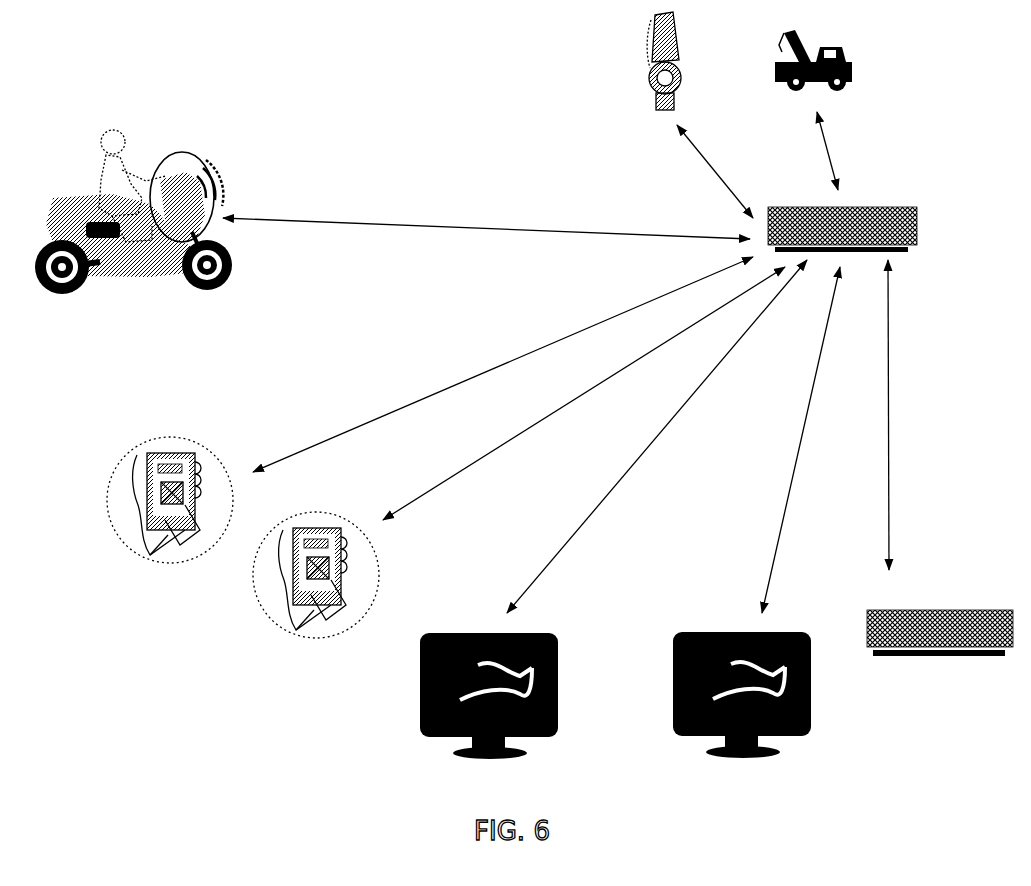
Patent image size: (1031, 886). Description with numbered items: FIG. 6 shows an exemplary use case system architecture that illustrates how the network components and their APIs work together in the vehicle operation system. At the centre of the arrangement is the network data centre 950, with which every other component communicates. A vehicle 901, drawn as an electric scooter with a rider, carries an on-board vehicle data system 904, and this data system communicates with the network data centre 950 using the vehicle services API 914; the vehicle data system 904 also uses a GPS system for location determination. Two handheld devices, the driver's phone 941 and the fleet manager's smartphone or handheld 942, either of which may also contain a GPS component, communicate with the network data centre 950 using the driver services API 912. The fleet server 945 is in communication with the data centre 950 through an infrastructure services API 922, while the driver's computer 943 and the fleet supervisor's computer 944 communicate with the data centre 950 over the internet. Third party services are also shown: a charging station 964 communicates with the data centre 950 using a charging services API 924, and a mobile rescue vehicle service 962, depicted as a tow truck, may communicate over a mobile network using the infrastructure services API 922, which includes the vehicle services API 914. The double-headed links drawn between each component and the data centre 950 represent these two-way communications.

The vehicle 901 is at (132, 259).
The vehicle data system 904 is at (175, 148).
The driver services API 912 is at (519, 388).
The vehicle services API 914 is at (486, 221).
The infrastructure services API 922 is at (875, 341).
The charging services API 924 is at (715, 171).
The driver's phone 941 is at (139, 535).
The fleet manager's smartphone or handheld 942 is at (284, 614).
The driver's computer 943 is at (443, 701).
The fleet supervisor's computer 944 is at (696, 695).
The fleet server 945 is at (940, 676).
The network data centre 950 is at (883, 226).
The mobile rescue vehicle service 962 is at (852, 60).
The charging station 964 is at (598, 59).